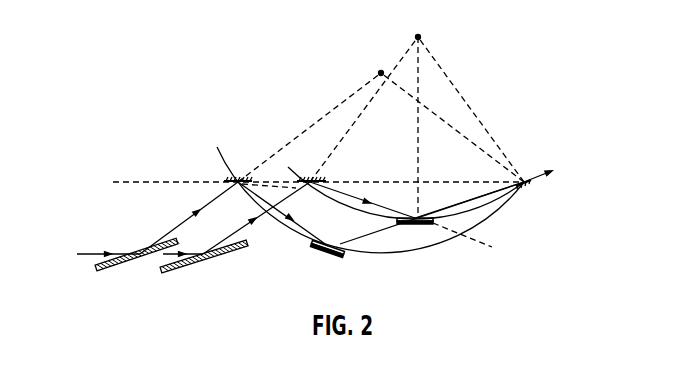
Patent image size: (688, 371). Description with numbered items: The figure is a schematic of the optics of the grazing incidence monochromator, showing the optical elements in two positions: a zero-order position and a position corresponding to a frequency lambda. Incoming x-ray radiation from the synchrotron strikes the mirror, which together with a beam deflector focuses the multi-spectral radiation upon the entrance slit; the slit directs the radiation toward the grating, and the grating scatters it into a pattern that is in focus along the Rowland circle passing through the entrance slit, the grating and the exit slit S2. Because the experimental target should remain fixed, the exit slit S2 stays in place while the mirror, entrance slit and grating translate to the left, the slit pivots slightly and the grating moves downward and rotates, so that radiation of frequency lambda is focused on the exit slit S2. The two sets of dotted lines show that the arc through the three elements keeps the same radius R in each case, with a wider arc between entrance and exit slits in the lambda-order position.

The exit slit S2 is at (526, 195).
The radius R is at (452, 109).